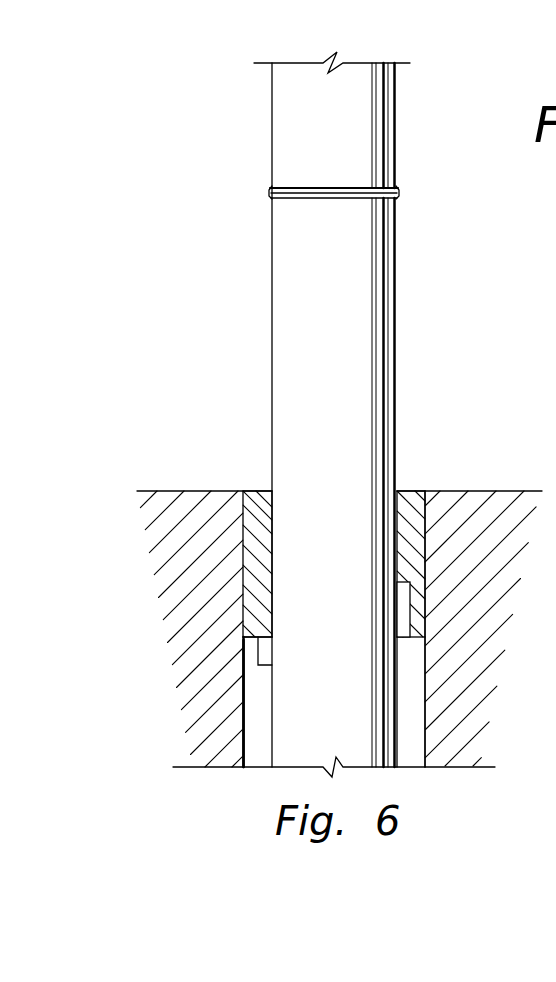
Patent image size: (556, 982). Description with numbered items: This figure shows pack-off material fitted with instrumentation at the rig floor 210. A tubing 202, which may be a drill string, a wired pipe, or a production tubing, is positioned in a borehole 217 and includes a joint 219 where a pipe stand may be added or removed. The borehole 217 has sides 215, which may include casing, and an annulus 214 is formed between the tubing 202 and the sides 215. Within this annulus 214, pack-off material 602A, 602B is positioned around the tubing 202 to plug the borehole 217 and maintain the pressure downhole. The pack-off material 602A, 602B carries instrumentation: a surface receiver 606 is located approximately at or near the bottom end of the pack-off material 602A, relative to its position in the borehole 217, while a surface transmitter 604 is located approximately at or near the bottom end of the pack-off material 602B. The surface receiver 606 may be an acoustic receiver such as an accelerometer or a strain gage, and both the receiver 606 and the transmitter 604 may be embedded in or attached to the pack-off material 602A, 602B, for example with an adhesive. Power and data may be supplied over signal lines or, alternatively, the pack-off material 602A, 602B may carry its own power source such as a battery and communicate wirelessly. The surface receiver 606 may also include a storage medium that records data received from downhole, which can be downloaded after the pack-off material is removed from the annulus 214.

The tubing 202 is at (272, 102).
The joint 219 is at (272, 188).
The rig floor 210 is at (505, 488).
The pack-off material 602A is at (262, 566).
The pack-off material 602B is at (402, 516).
The surface transmitter 604 is at (403, 603).
The surface receiver 606 is at (265, 652).
The annulus 214 is at (258, 690).
The sides 215 is at (244, 735).
The borehole 217 is at (427, 752).